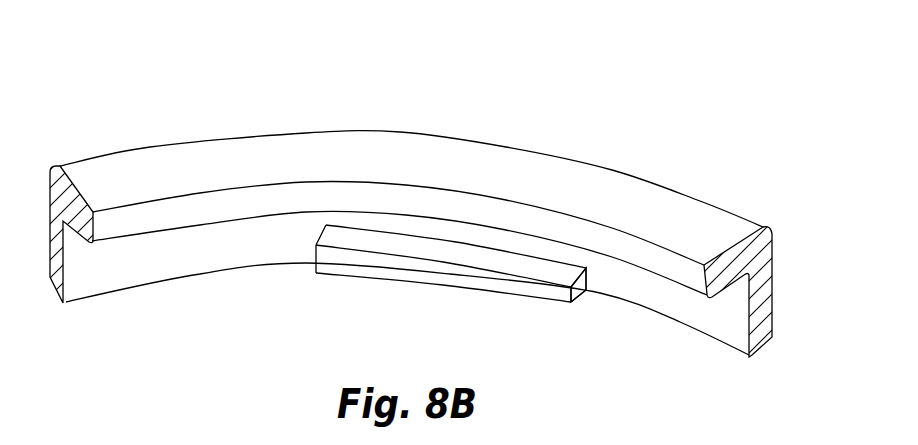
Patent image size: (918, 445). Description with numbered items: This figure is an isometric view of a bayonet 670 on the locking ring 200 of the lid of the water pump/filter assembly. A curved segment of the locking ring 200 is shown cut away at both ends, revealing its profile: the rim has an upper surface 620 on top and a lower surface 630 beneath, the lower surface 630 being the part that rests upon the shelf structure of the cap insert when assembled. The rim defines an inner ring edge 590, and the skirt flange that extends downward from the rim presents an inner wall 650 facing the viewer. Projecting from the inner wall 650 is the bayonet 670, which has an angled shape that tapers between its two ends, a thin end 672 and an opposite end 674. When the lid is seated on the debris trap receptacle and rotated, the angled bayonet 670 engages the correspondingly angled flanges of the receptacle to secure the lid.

The locking ring 200 is at (415, 235).
The inner ring edge 590 is at (220, 203).
The upper surface 620 is at (105, 180).
The lower surface 630 is at (738, 287).
The inner wall 650 is at (108, 272).
The bayonet 670 is at (393, 329).
The thin end 672 is at (557, 292).
The thin end 674 is at (334, 267).